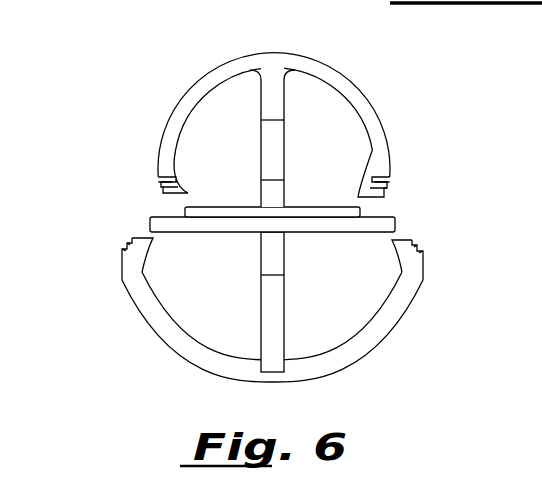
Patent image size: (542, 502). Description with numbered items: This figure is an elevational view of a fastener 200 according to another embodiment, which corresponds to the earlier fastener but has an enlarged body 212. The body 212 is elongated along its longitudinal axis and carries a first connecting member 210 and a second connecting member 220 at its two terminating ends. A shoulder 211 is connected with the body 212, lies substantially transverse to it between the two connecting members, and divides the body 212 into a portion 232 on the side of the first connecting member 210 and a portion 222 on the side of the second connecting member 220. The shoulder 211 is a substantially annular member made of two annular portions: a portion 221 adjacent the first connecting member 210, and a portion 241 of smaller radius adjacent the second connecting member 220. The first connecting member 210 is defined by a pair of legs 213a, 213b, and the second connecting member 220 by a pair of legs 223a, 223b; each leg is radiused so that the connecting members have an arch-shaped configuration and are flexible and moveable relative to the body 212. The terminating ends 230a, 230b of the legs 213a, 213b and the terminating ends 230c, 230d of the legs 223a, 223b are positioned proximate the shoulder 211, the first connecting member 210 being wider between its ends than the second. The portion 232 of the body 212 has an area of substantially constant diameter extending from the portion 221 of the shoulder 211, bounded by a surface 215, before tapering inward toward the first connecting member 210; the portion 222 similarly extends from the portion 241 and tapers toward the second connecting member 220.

The fastener 200 is at (167, 88).
The first connecting member 210 is at (284, 312).
The shoulder 211 is at (400, 217).
The body 212 is at (296, 318).
The leg 213a is at (140, 318).
The leg 213b is at (421, 296).
The surface 215 is at (532, 227).
The second connecting member 220 is at (292, 98).
The annular portion 221 is at (150, 224).
The portion of body 222 is at (261, 152).
The leg 223a is at (226, 67).
The leg 223b is at (378, 118).
The terminating end 230a is at (123, 252).
The terminating end 230b is at (415, 248).
The terminating end 230c is at (157, 178).
The terminating end 230d is at (392, 183).
The portion of body 232 is at (261, 297).
The annular portion 241 is at (184, 209).